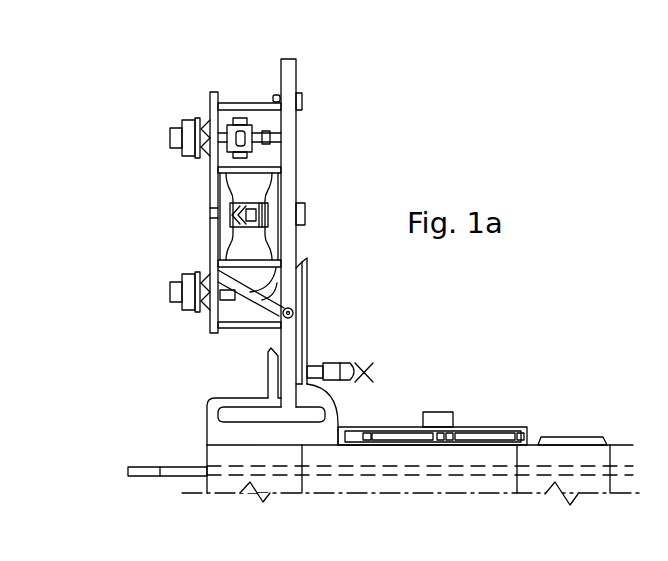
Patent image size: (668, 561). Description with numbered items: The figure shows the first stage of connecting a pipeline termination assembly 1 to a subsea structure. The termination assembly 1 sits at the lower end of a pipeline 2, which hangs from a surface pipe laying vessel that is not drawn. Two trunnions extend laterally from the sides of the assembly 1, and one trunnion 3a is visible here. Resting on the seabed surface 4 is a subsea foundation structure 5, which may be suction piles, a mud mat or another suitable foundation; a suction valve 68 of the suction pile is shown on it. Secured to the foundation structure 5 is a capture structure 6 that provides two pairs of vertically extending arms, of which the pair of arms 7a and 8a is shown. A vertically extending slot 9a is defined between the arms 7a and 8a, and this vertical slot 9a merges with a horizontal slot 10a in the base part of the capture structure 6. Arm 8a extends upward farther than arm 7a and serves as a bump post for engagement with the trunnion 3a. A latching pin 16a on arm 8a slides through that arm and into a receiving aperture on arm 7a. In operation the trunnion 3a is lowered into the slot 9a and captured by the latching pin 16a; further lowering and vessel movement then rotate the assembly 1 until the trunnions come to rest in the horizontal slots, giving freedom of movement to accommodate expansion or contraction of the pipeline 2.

The pipeline termination assembly 1 is at (145, 103).
The pipeline 2 is at (290, 80).
The trunnion 3a is at (293, 311).
The seabed surface 4 is at (143, 465).
The subsea foundation structure 5 is at (517, 398).
The capture structure 6 is at (215, 432).
The arm 7a is at (270, 365).
The arm 8a is at (308, 350).
The vertical slot 9a is at (302, 386).
The horizontal slot 10a is at (230, 413).
The latching pin 16a is at (320, 363).
The suction valve 68 is at (443, 410).